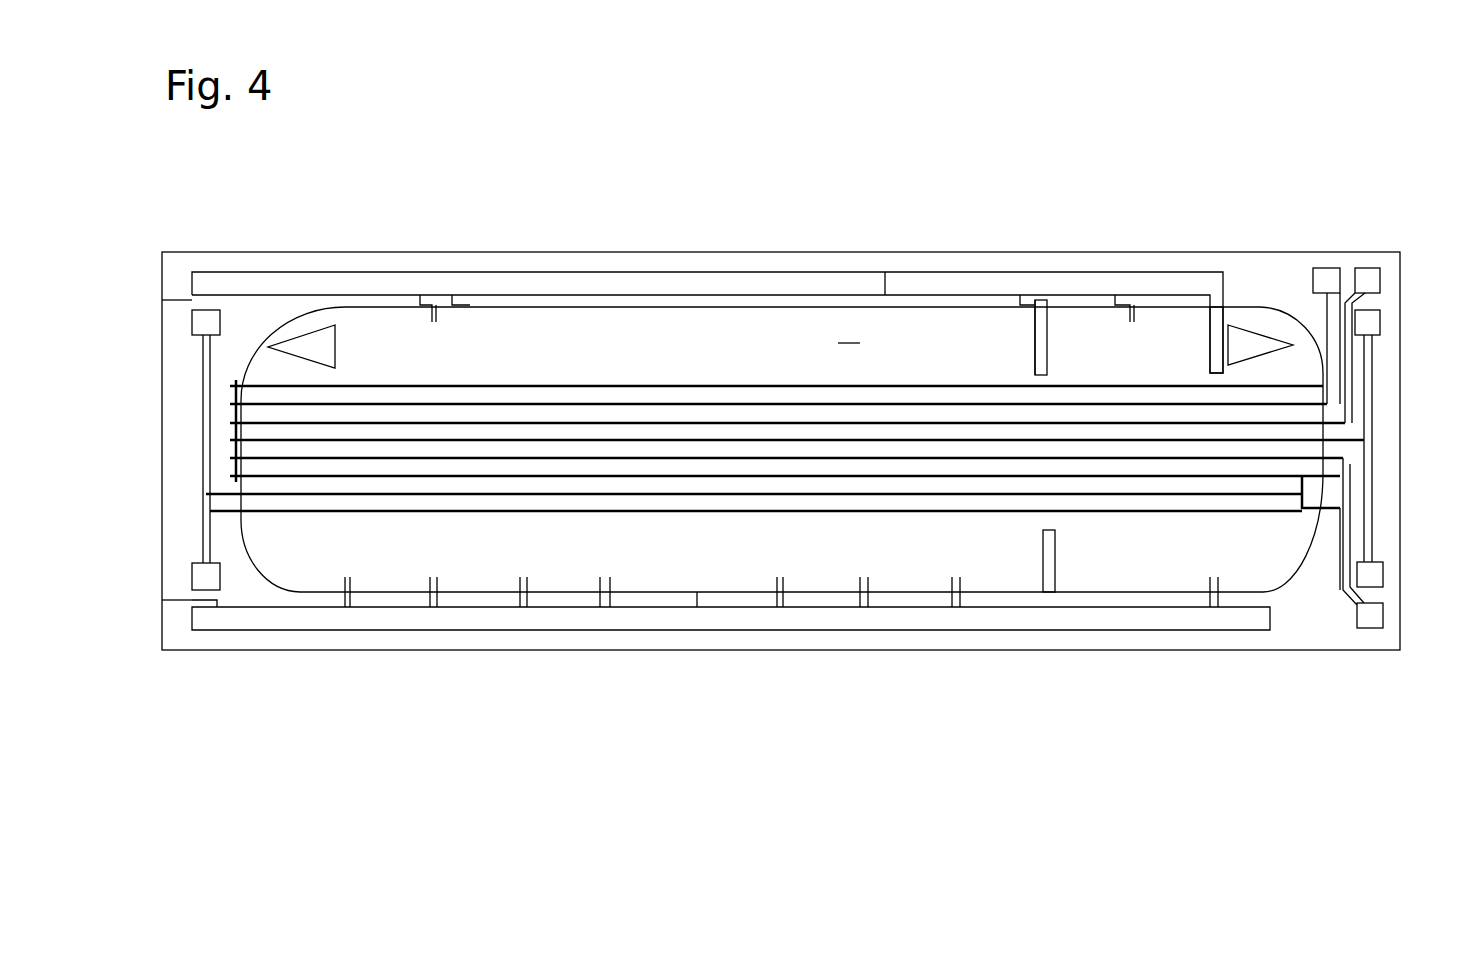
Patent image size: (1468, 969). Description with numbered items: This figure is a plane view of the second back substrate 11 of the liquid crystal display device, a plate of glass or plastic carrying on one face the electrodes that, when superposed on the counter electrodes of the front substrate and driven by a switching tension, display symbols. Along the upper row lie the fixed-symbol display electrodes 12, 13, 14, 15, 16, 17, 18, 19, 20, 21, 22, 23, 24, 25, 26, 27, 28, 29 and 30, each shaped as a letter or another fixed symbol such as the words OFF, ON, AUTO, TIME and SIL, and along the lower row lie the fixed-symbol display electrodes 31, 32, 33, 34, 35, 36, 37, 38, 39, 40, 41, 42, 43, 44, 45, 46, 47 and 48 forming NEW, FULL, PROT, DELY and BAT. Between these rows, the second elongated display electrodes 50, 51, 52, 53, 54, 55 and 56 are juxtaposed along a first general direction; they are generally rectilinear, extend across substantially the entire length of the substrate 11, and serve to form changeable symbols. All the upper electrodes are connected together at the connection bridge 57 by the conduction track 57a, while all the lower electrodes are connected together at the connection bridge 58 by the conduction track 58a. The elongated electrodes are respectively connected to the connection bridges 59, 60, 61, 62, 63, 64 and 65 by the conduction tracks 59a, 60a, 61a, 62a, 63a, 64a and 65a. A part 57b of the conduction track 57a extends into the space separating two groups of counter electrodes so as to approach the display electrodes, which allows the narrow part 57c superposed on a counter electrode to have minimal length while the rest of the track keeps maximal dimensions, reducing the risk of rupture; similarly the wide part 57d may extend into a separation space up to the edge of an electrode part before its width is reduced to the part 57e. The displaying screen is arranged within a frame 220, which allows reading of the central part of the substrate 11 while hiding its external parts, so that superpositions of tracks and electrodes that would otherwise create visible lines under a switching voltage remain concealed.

The second back substrate 11 is at (788, 353).
The display electrode 12 is at (301, 273).
The display electrode 13 is at (371, 280).
The display electrode 14 is at (469, 280).
The display electrode 15 is at (506, 280).
The display electrode 16 is at (576, 280).
The display electrode 17 is at (621, 280).
The display electrode 18 is at (700, 280).
The display electrode 19 is at (740, 280).
The display electrode 20 is at (780, 280).
The display electrode 21 is at (817, 280).
The display electrode 22 is at (856, 260).
The display electrode 23 is at (915, 280).
The display electrode 24 is at (949, 280).
The display electrode 25 is at (972, 280).
The display electrode 26 is at (1016, 280).
The display electrode 27 is at (1098, 254).
The display electrode 28 is at (1138, 280).
The display electrode 29 is at (1172, 262).
The display electrode 30 is at (1199, 280).
The frame 220 is at (1264, 240).
The display electrode 31 is at (330, 638).
The display electrode 32 is at (380, 635).
The display electrode 33 is at (442, 635).
The display electrode 34 is at (532, 635).
The display electrode 35 is at (579, 633).
The display electrode 36 is at (623, 627).
The display electrode 37 is at (663, 629).
The display electrode 38 is at (735, 624).
The display electrode 39 is at (777, 624).
The display electrode 40 is at (823, 624).
The display electrode 41 is at (874, 624).
The display electrode 42 is at (950, 624).
The display electrode 43 is at (997, 624).
The display electrode 44 is at (1042, 627).
The display electrode 45 is at (1088, 624).
The display electrode 46 is at (1159, 623).
The display electrode 47 is at (1207, 623).
The display electrode 48 is at (1248, 623).
The second elongated display electrode 50 is at (164, 326).
The second elongated display electrode 51 is at (718, 423).
The second elongated display electrode 52 is at (720, 400).
The second elongated display electrode 53 is at (729, 424).
The second elongated display electrode 54 is at (735, 455).
The second elongated display electrode 55 is at (723, 492).
The second elongated display electrode 56 is at (163, 561).
The connection bridge 57 is at (703, 275).
The conduction track 57a is at (884, 211).
The part of conduction track 57b is at (1112, 250).
The narrow part of conduction track 57c is at (1051, 241).
The part of conduction track 57d is at (460, 241).
The part of conduction track 57e is at (406, 250).
The connection bridge 58 is at (731, 682).
The conduction track 58a is at (701, 681).
The connection bridge 59 is at (1310, 235).
The conduction track 59a is at (1389, 348).
The connection bridge 60 is at (1355, 235).
The conduction track 60a is at (1399, 358).
The connection bridge 61 is at (1378, 256).
The conduction track 61a is at (1410, 448).
The connection bridge 62 is at (1379, 665).
The conduction track 62a is at (1405, 552).
The connection bridge 63 is at (1344, 594).
The conduction track 63a is at (1315, 602).
The connection bridge 64 is at (170, 239).
The conduction track 64a is at (235, 370).
The connection bridge 65 is at (196, 679).
The conduction track 65a is at (161, 682).